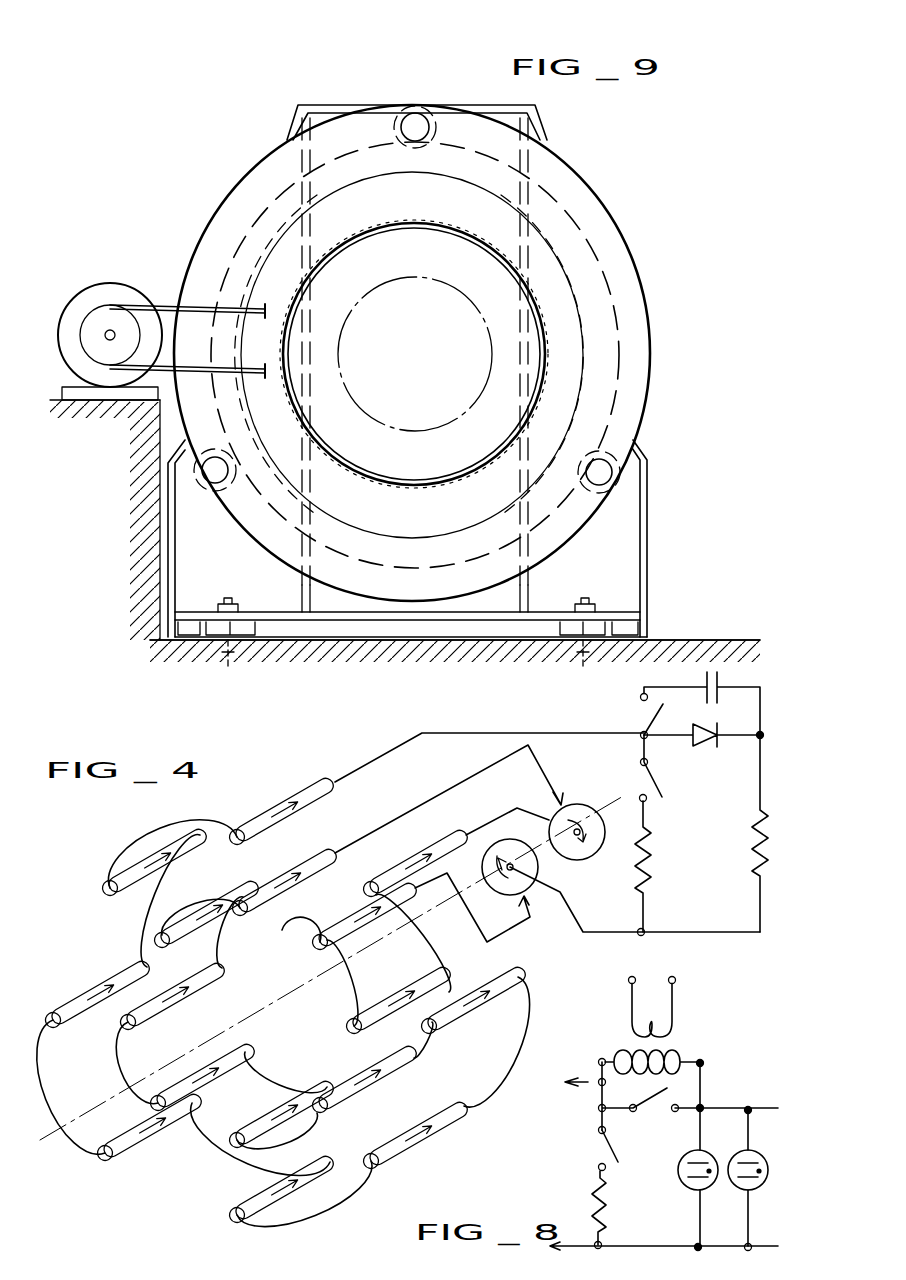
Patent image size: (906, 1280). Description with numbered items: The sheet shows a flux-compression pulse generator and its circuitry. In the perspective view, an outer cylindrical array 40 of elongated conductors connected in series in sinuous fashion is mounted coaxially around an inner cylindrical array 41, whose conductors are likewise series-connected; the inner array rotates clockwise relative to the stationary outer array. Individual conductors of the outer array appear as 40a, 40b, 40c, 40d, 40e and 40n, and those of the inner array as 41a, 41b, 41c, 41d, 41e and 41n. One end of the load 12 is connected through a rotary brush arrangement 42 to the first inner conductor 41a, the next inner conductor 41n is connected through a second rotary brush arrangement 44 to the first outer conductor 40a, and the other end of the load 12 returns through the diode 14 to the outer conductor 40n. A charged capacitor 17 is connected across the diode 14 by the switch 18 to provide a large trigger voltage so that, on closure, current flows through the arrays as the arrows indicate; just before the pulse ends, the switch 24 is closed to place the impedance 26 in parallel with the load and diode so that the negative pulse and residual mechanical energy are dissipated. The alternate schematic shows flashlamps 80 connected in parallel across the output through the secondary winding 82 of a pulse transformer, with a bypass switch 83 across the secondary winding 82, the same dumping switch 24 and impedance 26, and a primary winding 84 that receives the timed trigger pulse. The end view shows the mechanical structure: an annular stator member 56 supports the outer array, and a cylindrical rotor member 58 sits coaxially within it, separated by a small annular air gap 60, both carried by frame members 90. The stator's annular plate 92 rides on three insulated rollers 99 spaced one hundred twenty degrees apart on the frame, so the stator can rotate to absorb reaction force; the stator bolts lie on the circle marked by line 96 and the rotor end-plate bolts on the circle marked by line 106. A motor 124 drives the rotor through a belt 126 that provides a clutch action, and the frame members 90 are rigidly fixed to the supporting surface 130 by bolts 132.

In FIG. 4, the load 12 is at (752, 848).
In FIG. 4, the diode 14 is at (705, 749).
In FIG. 4, the charged capacitor 17 is at (722, 674).
In FIG. 4, the switch 18 is at (660, 708).
In FIG. 4, the switch 24 is at (657, 777).
In FIG. 8, the switch 24 is at (620, 1158).
In FIG. 4, the impedance 26 is at (650, 863).
In FIG. 8, the impedance 26 is at (603, 1198).
In FIG. 9, the outer cylindrical array 40 is at (432, 213).
In FIG. 4, the outer cylindrical array 40 is at (158, 817).
In FIG. 4, the first conductor of the outer cylindrical array 40a is at (436, 845).
In FIG. 4, the coil loop 40b is at (505, 968).
In FIG. 4, the coil loop 40c is at (460, 1115).
In FIG. 4, the coil loop 40d is at (237, 1205).
In FIG. 4, the coil loop 40e is at (130, 1150).
In FIG. 4, the elongated electrical conductor of the outer cylindrical array 40n is at (281, 805).
In FIG. 9, the inner cylindrical array 41 is at (427, 238).
In FIG. 4, the inner cylindrical array 41 is at (294, 962).
In FIG. 4, the first elongated conductor of the inner cylindrical array 41a is at (305, 950).
In FIG. 4, the coil conductor 41b is at (380, 986).
In FIG. 4, the coil conductor 41c is at (366, 1068).
In FIG. 4, the coil conductor 41d is at (269, 1121).
In FIG. 4, the coil conductor 41e is at (206, 1060).
In FIG. 4, the elongated electrical conductor of the inner cylindrical array 41n is at (296, 873).
In FIG. 4, the rotary brush arrangement 42 is at (543, 867).
In FIG. 4, the rotary brush arrangement 44 is at (590, 805).
In FIG. 9, the annular stator member 56 is at (609, 238).
In FIG. 9, the rotor member 58 is at (390, 366).
In FIG. 9, the annular air gap 60 is at (375, 463).
In FIG. 8, the flashlamps 80 is at (703, 1158).
In FIG. 8, the secondary winding 82 is at (683, 1057).
In FIG. 8, the bypass switch 83 is at (658, 1098).
In FIG. 8, the primary winding 84 is at (673, 1003).
In FIG. 9, the frame members 90 is at (646, 556).
In FIG. 9, the annular plate 92 is at (637, 281).
In FIG. 9, the line indicating circular array of bolts 96 is at (544, 228).
In FIG. 9, the insulated rollers 99 is at (415, 105).
In FIG. 9, the line indicating circular array of rotor bolts 106 is at (352, 298).
In FIG. 9, the motor 124 is at (125, 283).
In FIG. 9, the belt 126 is at (198, 306).
In FIG. 9, the supporting surface 130 is at (667, 640).
In FIG. 9, the bolts 132 is at (213, 678).